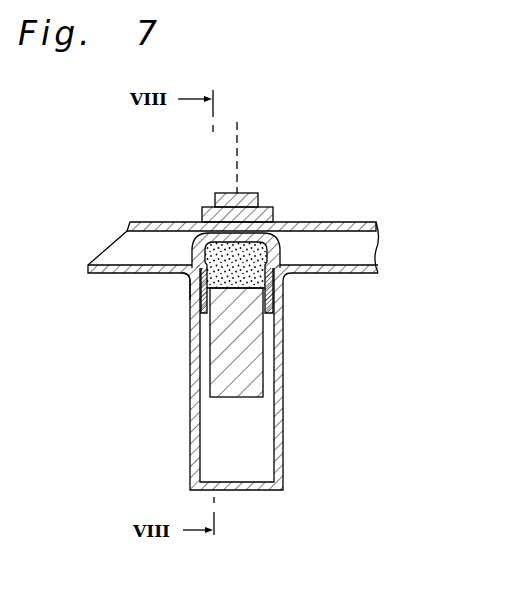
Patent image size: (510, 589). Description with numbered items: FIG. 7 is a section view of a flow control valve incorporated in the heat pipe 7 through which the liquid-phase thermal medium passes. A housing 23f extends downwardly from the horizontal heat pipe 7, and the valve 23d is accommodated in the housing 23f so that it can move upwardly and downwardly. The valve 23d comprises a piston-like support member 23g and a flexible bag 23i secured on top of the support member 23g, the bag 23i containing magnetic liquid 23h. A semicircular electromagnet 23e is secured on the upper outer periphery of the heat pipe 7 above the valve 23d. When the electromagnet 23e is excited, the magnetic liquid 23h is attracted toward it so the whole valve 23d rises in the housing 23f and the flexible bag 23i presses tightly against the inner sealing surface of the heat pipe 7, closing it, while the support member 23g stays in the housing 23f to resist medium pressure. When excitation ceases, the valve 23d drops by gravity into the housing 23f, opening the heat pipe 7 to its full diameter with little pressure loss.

The heat pipe 7 is at (363, 235).
The valve 23d is at (285, 296).
The semicircular electromagnet 23e is at (273, 211).
The housing 23f is at (200, 424).
The support member 23g is at (257, 383).
The magnetic liquid 23h is at (190, 287).
The flexible bag 23i is at (197, 250).